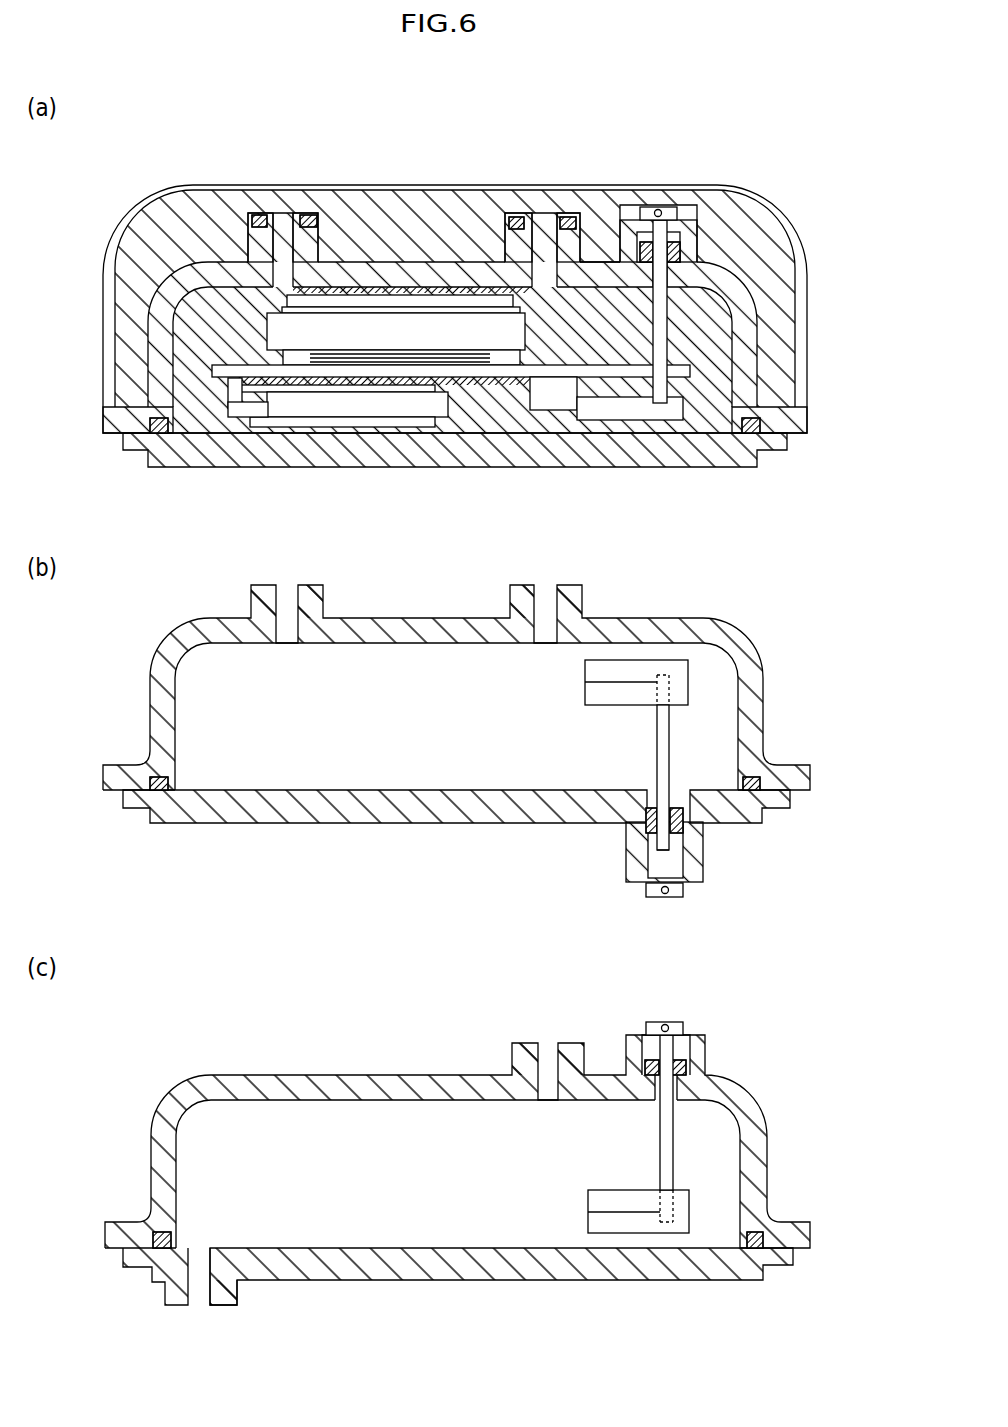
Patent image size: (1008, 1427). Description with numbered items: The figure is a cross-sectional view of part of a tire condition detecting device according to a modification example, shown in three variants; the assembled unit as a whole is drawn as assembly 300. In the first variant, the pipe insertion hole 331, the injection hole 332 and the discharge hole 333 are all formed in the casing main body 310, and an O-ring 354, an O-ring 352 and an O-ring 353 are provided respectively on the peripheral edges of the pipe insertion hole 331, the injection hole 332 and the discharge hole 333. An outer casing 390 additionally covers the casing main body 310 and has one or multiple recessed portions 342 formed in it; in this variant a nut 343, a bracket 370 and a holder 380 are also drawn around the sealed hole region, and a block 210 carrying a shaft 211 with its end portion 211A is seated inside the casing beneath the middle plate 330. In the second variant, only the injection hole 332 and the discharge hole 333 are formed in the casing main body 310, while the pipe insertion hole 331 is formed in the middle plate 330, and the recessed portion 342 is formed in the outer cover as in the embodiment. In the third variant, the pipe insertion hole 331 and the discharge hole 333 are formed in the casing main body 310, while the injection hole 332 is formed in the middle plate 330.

The container assembly 300 is at (770, 120).
The casing main body 310 is at (395, 633).
The middle plate 330 is at (273, 453).
The pipe insertion hole 331 is at (595, 258).
The injection hole 332 is at (268, 213).
The discharge hole 333 is at (543, 213).
The recessed portion 342 is at (680, 245).
The nut 343 is at (668, 207).
The O-ring 352 is at (256, 214).
The O-ring 353 is at (512, 217).
The O-ring 354 is at (655, 209).
The support bracket 370 is at (222, 412).
The shaft holder 380 is at (621, 220).
The outer casing 390 is at (370, 195).
The block 210 is at (603, 405).
The shaft 211 is at (667, 298).
The shaft end portion 211A is at (668, 221).